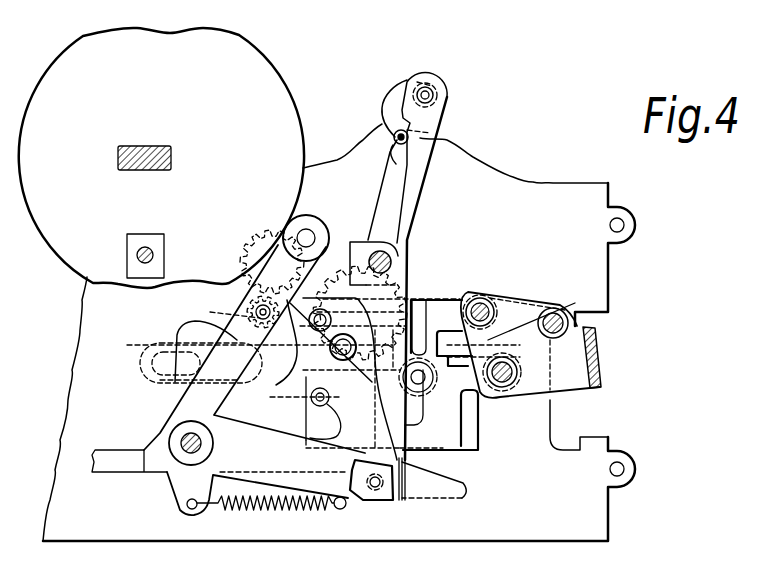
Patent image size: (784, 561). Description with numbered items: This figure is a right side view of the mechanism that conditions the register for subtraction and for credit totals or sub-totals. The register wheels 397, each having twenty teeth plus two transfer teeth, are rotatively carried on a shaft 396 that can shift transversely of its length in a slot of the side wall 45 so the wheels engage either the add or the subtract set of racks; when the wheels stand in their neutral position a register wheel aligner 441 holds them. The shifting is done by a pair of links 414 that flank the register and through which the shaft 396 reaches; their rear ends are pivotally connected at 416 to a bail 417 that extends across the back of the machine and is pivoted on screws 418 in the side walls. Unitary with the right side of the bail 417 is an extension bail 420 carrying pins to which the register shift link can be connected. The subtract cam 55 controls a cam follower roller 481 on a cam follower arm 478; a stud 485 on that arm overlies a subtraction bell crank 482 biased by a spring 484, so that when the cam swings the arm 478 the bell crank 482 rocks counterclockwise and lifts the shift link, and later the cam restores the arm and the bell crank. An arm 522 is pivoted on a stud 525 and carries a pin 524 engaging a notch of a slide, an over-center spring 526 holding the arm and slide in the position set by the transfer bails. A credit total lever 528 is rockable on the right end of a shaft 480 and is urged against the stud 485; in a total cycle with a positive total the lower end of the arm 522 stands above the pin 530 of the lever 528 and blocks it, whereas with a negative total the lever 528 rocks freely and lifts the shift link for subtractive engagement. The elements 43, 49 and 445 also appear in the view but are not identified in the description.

The subtract cam 55 is at (272, 62).
The slot 43 is at (150, 147).
The pin block 49 is at (165, 258).
The side wall 45 is at (553, 183).
The cam follower roller 481 is at (306, 216).
The over-center spring 526 is at (407, 80).
The arm 522 is at (432, 122).
The stud 525 is at (388, 258).
The register wheels 397 is at (333, 275).
The links 414 is at (446, 300).
The pivotal connection 416 is at (478, 300).
The bail 417 is at (552, 308).
The screws 418 is at (508, 393).
The extension bail 420 is at (590, 393).
The stud 485 is at (210, 312).
The lever 445 is at (338, 302).
The subtraction bell crank 482 is at (170, 393).
The cam follower arm 478 is at (183, 402).
The shaft 480 is at (181, 443).
The shaft 396 is at (309, 387).
The register wheel aligner 441 is at (310, 439).
The spring 484 is at (292, 507).
The credit total lever 528 is at (372, 499).
The pin 530 is at (380, 484).
The pin 524 is at (438, 390).